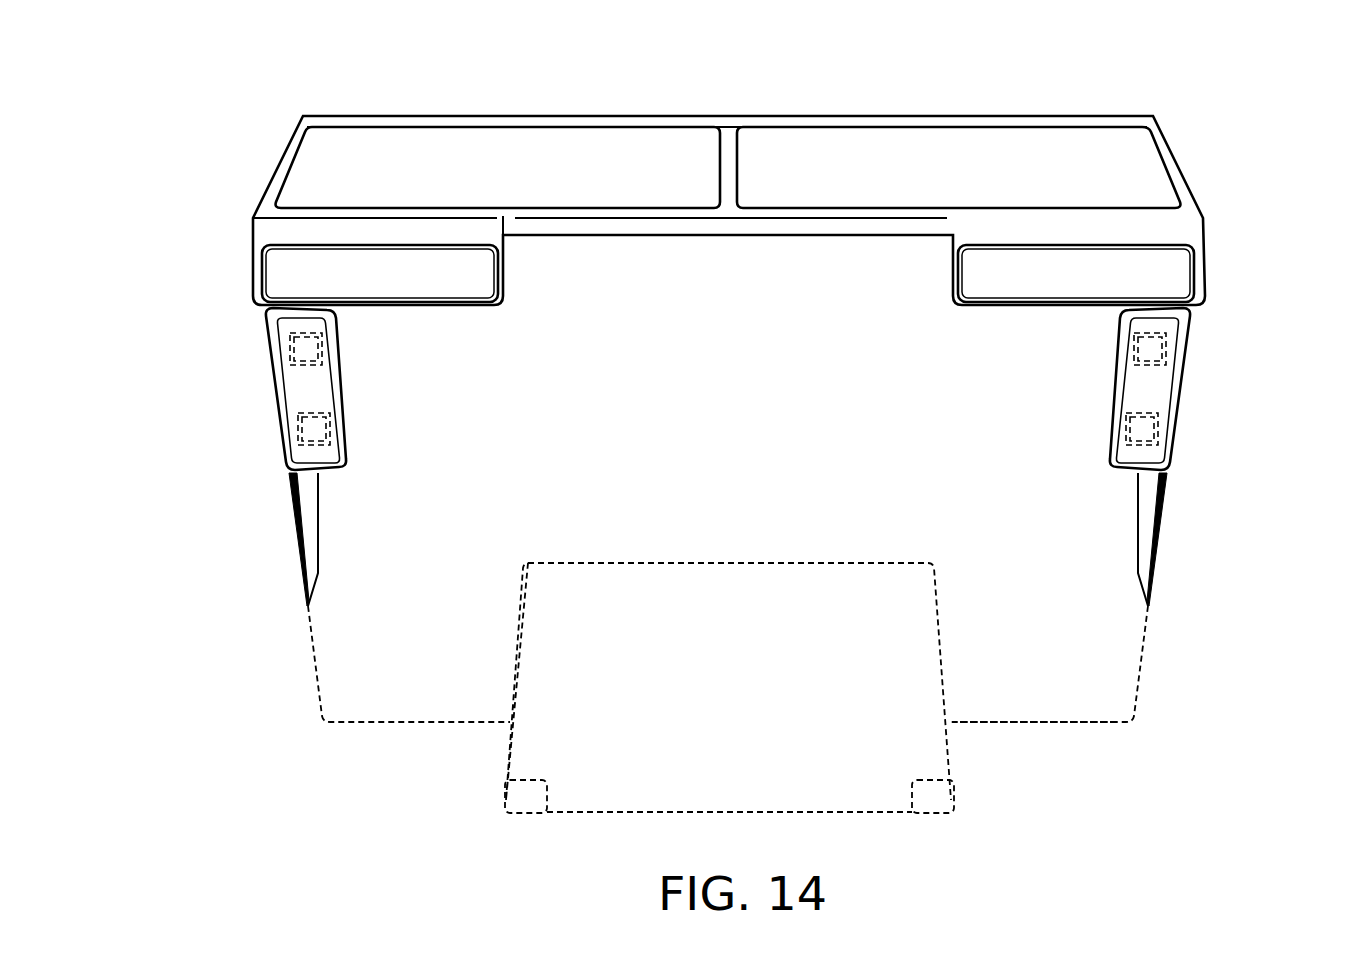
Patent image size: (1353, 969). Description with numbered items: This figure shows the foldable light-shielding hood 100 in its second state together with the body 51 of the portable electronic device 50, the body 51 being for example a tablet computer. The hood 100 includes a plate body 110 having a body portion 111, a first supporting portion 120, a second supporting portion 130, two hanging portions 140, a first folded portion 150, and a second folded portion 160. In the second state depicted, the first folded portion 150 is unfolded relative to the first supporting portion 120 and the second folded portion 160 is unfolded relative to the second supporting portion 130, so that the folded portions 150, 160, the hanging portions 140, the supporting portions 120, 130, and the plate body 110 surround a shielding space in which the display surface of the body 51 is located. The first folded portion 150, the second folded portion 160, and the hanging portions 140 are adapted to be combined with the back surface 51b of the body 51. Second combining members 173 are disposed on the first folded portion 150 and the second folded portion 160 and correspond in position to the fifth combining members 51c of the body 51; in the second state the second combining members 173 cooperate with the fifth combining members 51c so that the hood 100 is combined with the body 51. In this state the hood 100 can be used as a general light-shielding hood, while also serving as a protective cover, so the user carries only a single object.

The foldable light-shielding hood 100 is at (282, 67).
The plate body 110 is at (602, 148).
The body portion 111 is at (728, 125).
The hanging portion 140 is at (288, 273).
The first folded portion 150 is at (296, 380).
The second folded portion 160 is at (1163, 385).
The fifth combining members 51c is at (291, 333).
The second combining members 173 is at (320, 351).
The first supporting portion 120 is at (310, 521).
The second supporting portion 130 is at (1148, 521).
The body 51 is at (387, 702).
The back surface 51b is at (1042, 712).
The portable electronic device 50 is at (1273, 815).